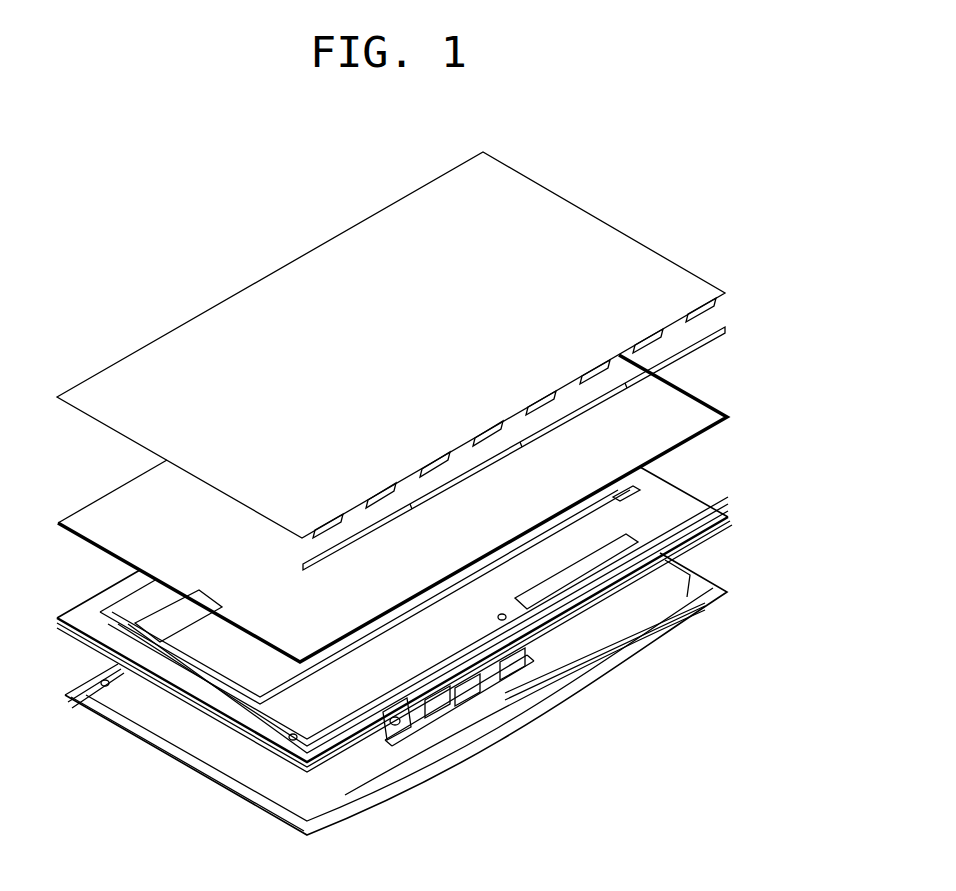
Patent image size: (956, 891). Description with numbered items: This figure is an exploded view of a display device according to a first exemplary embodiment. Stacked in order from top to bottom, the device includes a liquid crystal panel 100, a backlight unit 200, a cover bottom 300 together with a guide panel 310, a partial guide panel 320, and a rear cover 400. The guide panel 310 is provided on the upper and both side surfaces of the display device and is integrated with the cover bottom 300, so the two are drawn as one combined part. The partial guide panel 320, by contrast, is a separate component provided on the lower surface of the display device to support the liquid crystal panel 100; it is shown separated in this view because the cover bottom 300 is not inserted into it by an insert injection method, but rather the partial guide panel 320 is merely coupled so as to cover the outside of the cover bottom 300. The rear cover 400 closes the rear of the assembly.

The liquid crystal panel 100 is at (674, 284).
The backlight unit 200 is at (704, 413).
The cover bottom 300 is at (703, 512).
The guide panel 310 is at (733, 519).
The partial guide panel 320 is at (724, 328).
The rear cover 400 is at (727, 585).